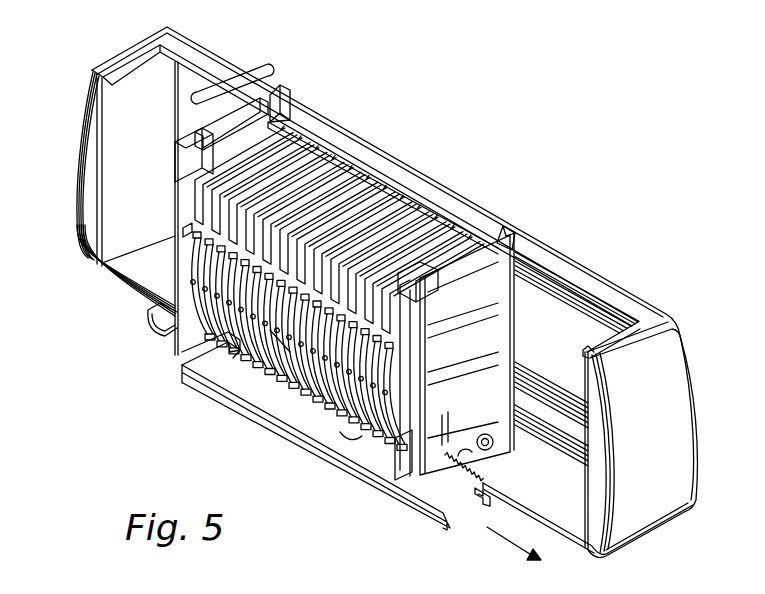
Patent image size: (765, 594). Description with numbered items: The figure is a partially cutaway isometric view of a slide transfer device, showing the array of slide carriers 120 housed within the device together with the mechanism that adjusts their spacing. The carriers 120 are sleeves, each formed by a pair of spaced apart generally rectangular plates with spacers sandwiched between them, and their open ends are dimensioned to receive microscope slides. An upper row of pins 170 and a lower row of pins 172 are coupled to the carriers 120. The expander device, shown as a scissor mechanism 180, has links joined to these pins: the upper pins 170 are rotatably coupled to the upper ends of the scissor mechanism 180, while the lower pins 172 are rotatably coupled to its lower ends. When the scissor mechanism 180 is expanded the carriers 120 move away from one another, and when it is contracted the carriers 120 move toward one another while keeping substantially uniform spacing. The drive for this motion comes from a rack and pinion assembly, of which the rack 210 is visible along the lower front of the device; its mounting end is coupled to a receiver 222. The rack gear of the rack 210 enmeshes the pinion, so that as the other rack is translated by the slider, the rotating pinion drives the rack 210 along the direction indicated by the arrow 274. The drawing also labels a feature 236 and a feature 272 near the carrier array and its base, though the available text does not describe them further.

The slide carriers 120 is at (406, 184).
The receiver 222 is at (279, 94).
The latch 236 is at (504, 232).
The upper row of pins 170 is at (171, 235).
The scissor mechanism 180 is at (172, 281).
The lower row of pins 172 is at (163, 328).
The guide 272 is at (183, 355).
The rack 210 is at (305, 448).
The arrow 274 is at (492, 540).